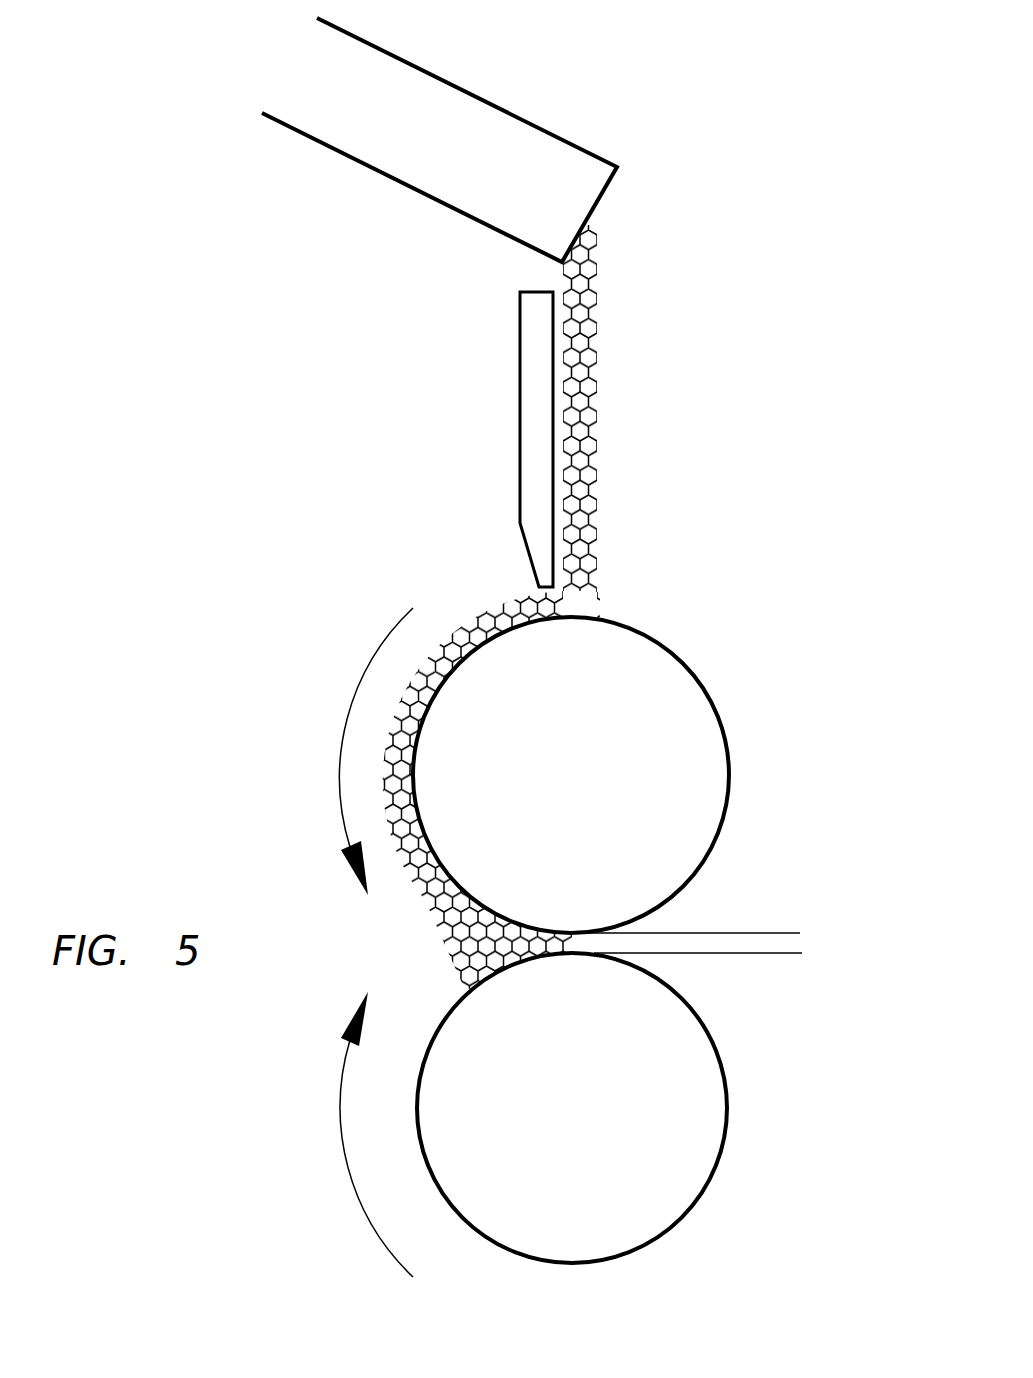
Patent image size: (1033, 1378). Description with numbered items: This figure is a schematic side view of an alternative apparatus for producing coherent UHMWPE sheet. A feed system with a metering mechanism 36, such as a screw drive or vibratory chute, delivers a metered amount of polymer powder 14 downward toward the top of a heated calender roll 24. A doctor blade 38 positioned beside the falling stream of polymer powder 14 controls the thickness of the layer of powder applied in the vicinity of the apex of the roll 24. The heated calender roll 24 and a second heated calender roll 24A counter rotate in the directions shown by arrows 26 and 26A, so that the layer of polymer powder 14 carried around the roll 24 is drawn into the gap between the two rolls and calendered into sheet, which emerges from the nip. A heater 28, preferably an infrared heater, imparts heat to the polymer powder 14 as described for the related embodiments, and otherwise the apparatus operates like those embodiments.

The polymer powder 14 is at (586, 521).
The heated calender roll 24 is at (698, 707).
The heated calender roll 24A is at (708, 1152).
The arrow 26 is at (362, 692).
The arrow 26A is at (348, 1172).
The heater 28 is at (757, 938).
The metering mechanism 36 is at (446, 118).
The doctor blade 38 is at (540, 434).